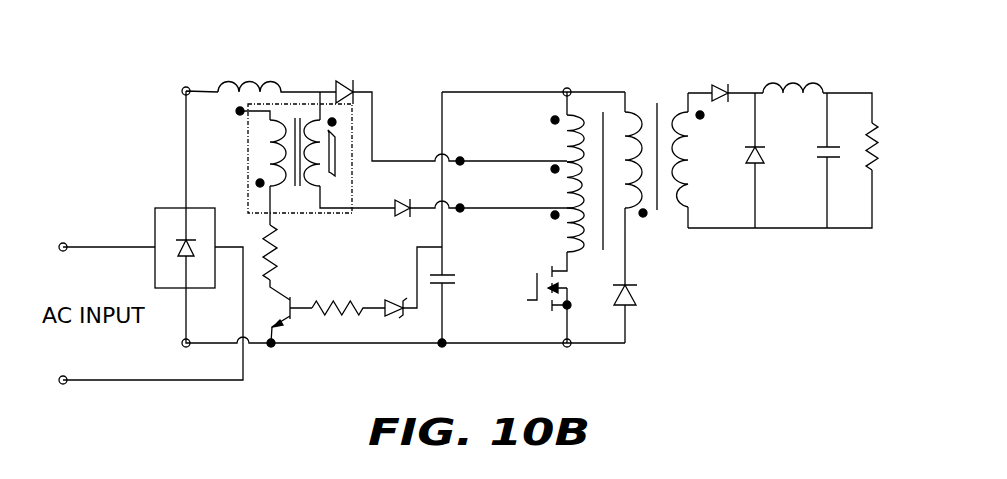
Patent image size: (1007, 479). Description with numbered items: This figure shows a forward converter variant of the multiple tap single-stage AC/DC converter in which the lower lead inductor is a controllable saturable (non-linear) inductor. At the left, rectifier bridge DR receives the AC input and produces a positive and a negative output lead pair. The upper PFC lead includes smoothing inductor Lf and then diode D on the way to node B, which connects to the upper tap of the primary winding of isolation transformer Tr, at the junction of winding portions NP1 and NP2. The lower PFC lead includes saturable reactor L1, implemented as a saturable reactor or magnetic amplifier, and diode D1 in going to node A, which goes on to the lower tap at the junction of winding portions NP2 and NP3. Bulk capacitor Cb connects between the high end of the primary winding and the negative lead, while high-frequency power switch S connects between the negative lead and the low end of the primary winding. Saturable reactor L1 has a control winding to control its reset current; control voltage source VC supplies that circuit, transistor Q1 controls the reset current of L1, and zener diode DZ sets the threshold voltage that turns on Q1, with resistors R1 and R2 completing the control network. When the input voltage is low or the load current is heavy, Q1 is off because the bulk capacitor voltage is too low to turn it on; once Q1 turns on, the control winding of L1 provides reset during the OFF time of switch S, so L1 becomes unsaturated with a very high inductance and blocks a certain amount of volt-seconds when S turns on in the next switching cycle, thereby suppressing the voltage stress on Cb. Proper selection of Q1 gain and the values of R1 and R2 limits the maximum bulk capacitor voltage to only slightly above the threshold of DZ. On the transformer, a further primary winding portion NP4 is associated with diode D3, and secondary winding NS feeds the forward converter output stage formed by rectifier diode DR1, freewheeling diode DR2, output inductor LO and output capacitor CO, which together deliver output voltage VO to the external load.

The smoothing inductor Lf is at (277, 68).
The diode D is at (344, 75).
The control voltage source VC is at (234, 112).
The saturable reactor L1 is at (246, 150).
The rectifier bridge DR is at (183, 235).
The resistor R2 is at (285, 252).
The transistor Q1 is at (279, 311).
The resistor R1 is at (345, 315).
The zener diode DZ is at (393, 320).
The diode D1 is at (398, 220).
The bulk capacitor Cb is at (454, 286).
The node B is at (460, 161).
The node A is at (461, 209).
The primary winding portion NP1 is at (538, 138).
The primary winding portion NP2 is at (537, 185).
The primary winding portion NP3 is at (537, 230).
The power switch S is at (554, 297).
The isolation transformer Tr is at (630, 160).
The primary winding portion NP4 is at (649, 182).
The diode D3 is at (642, 298).
The secondary winding NS is at (692, 159).
The rectifier diode DR1 is at (722, 77).
The freewheeling diode DR2 is at (772, 169).
The output inductor LO is at (793, 71).
The output capacitor CO is at (816, 138).
The output voltage VO is at (886, 153).